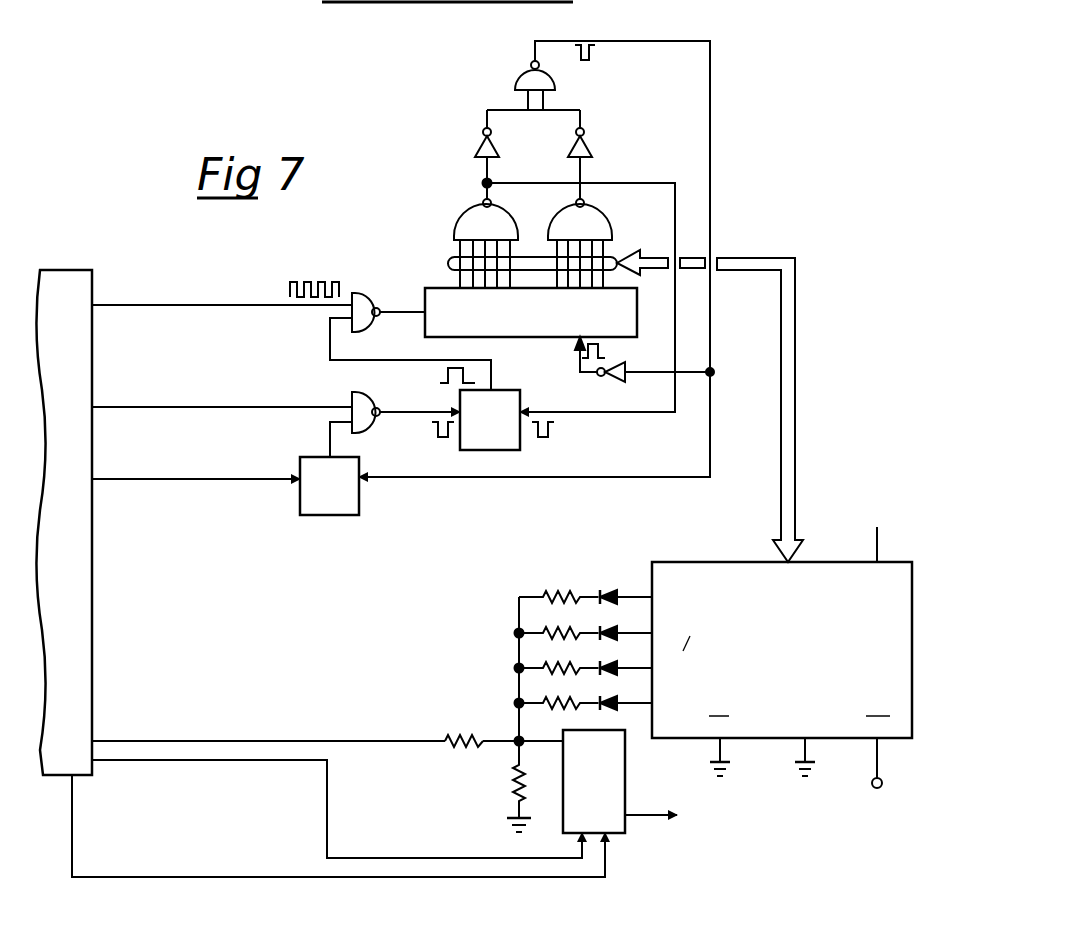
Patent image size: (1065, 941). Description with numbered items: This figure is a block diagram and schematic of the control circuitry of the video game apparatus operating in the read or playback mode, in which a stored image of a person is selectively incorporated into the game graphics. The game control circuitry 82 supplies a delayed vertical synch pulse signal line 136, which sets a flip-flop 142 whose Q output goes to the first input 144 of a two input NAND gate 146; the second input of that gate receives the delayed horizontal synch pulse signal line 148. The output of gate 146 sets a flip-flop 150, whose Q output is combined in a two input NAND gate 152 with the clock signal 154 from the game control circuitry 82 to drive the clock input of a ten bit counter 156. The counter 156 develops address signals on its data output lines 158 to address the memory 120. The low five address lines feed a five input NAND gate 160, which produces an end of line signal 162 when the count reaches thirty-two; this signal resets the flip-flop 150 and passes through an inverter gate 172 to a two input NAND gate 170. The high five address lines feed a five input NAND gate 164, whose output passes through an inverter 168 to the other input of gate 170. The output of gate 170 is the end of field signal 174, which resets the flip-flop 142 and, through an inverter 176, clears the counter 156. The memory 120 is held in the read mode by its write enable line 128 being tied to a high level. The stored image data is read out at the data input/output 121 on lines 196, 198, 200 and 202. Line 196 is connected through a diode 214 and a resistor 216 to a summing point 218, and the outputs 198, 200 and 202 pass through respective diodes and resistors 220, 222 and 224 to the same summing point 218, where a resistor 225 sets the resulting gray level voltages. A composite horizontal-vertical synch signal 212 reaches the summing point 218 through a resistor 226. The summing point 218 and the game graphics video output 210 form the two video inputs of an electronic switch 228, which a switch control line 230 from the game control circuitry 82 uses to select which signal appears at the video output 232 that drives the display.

The game control circuitry 82 is at (62, 270).
The clock signal 154 is at (203, 303).
The two input NAND gate 152 is at (362, 293).
The delayed horizontal synch pulse signal line 148 is at (283, 395).
The two input NAND gate 146 is at (376, 383).
The first input of NAND gate 146 144 is at (332, 440).
The delayed vertical synch pulse signal line 136 is at (268, 467).
The flip-flop 142 is at (360, 500).
The flip-flop 150 is at (520, 450).
The 10 bit counter 156 is at (520, 337).
The data output lines 158 is at (745, 256).
The inverter 176 is at (628, 362).
The five input NAND gate 160 is at (462, 212).
The five input NAND gate 164 is at (606, 212).
The end of line signal 162 is at (523, 183).
The inverter gate 172 is at (483, 137).
The inverter 168 is at (594, 140).
The two input NAND gate 170 is at (513, 78).
The end of field signal 174 is at (530, 48).
The memory 120 is at (728, 562).
The write enable line 128 is at (880, 765).
The data input/output 121 is at (641, 558).
The resistor 216 is at (548, 592).
The resistor 220 is at (548, 628).
The resistor 222 is at (548, 663).
The resistor 224 is at (548, 698).
The diode 214 is at (609, 590).
The data line 196 is at (634, 595).
The data output 198 is at (634, 631).
The data output 200 is at (634, 666).
The data output 202 is at (634, 701).
The composite horizontal-vertical synch signal 212 is at (320, 741).
The resistor 226 is at (462, 722).
The summing point 218 is at (515, 737).
The resistor 225 is at (514, 779).
The game graphics video output 210 is at (329, 793).
The switch control line 230 is at (165, 877).
The electronic switch 228 is at (627, 760).
The video output 232 is at (641, 820).